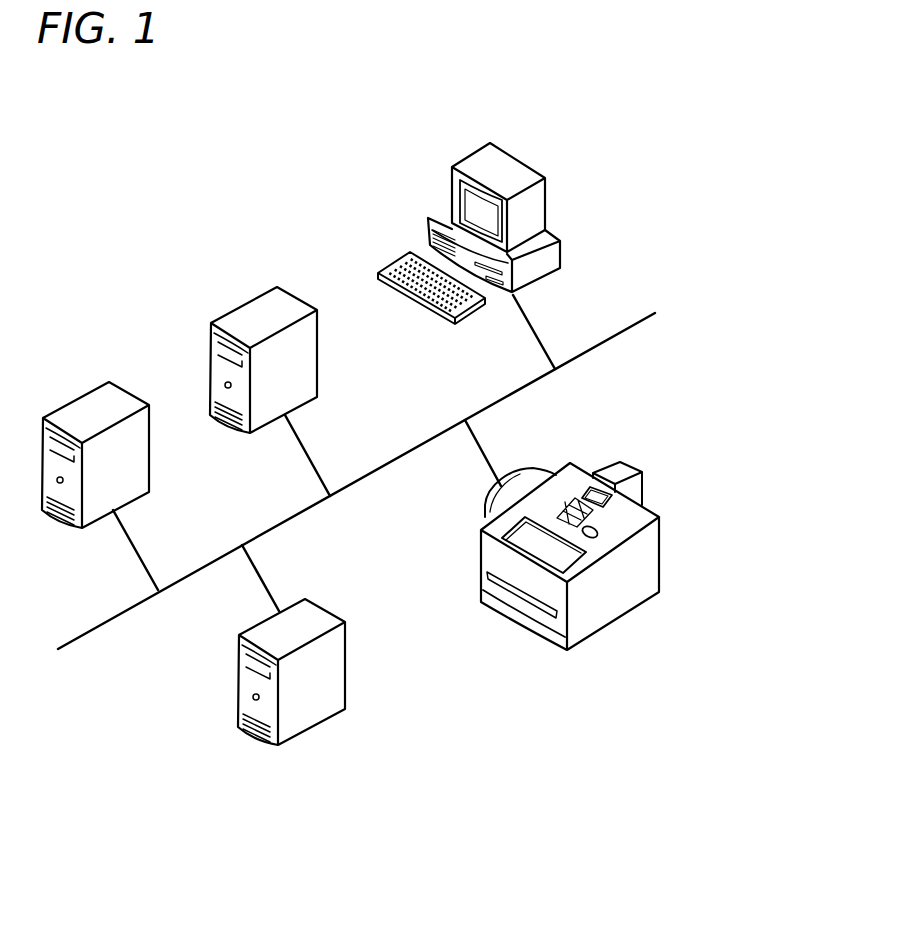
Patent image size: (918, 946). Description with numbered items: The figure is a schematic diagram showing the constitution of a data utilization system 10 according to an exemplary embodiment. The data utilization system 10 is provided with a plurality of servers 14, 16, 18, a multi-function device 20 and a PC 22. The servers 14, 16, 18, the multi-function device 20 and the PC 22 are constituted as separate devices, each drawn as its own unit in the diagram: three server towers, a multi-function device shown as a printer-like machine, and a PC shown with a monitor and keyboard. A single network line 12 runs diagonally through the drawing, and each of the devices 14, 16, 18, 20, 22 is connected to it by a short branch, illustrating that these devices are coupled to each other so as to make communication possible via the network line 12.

The data utilization system 10 is at (213, 97).
The network line 12 is at (418, 445).
The server 14 is at (82, 397).
The server 16 is at (335, 713).
The server 18 is at (252, 300).
The multi-function device 20 is at (617, 627).
The PC 22 is at (467, 152).